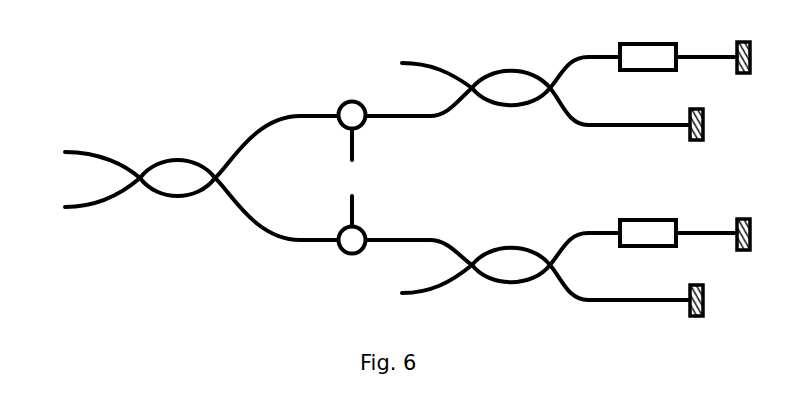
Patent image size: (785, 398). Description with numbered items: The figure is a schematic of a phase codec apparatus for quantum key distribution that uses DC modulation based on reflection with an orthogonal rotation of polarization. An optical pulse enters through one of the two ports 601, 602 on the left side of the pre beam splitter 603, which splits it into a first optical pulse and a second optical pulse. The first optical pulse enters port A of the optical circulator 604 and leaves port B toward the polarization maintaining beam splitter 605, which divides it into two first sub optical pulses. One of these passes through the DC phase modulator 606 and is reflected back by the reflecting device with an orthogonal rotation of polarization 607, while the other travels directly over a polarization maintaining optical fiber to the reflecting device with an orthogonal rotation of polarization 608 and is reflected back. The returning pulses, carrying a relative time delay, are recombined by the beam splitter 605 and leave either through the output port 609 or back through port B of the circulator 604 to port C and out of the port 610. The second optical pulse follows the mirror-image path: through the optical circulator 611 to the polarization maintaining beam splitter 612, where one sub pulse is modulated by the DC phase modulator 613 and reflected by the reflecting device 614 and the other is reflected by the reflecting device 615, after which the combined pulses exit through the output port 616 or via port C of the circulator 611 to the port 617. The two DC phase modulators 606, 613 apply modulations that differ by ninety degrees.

The port 601 is at (82, 161).
The port 602 is at (82, 198).
The pre beam splitter 603 is at (177, 178).
The optical circulator 604 is at (350, 119).
The polarization maintaining beam splitter 605 is at (511, 88).
The DC phase modulator 606 is at (648, 57).
The reflecting device with an orthogonal rotation of polarization 607 is at (744, 47).
The reflecting device with an orthogonal rotation of polarization 608 is at (696, 114).
The output port 609 is at (418, 71).
The port 610 is at (373, 149).
The optical circulator 611 is at (351, 241).
The polarization maintaining beam splitter 612 is at (511, 265).
The DC phase modulator 613 is at (648, 233).
The reflecting device with an orthogonal rotation of polarization 614 is at (744, 223).
The reflecting device with an orthogonal rotation of polarization 615 is at (696, 291).
The output port 616 is at (418, 284).
The port 617 is at (373, 207).